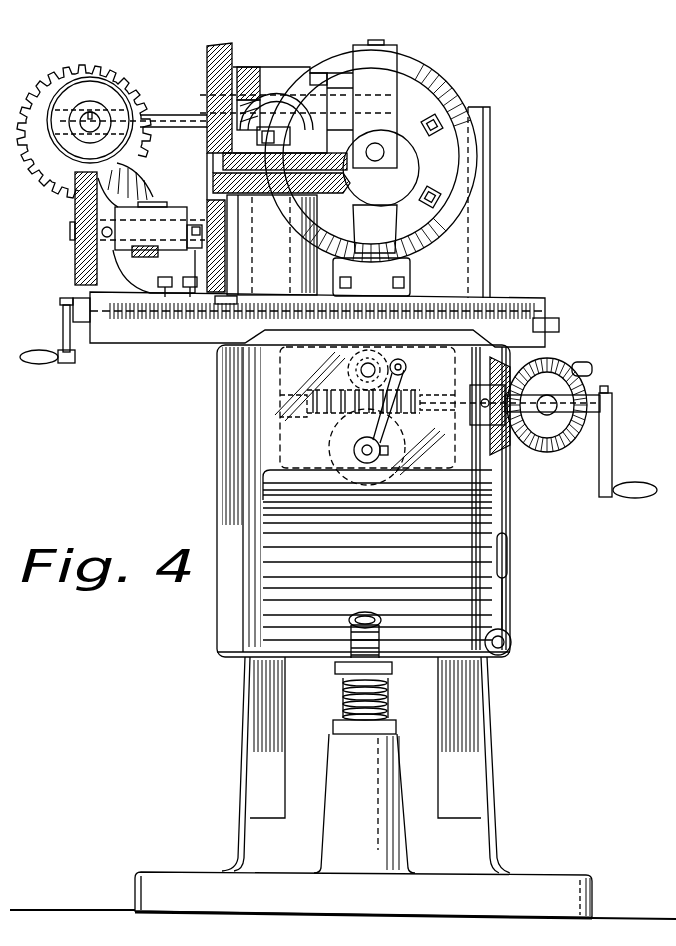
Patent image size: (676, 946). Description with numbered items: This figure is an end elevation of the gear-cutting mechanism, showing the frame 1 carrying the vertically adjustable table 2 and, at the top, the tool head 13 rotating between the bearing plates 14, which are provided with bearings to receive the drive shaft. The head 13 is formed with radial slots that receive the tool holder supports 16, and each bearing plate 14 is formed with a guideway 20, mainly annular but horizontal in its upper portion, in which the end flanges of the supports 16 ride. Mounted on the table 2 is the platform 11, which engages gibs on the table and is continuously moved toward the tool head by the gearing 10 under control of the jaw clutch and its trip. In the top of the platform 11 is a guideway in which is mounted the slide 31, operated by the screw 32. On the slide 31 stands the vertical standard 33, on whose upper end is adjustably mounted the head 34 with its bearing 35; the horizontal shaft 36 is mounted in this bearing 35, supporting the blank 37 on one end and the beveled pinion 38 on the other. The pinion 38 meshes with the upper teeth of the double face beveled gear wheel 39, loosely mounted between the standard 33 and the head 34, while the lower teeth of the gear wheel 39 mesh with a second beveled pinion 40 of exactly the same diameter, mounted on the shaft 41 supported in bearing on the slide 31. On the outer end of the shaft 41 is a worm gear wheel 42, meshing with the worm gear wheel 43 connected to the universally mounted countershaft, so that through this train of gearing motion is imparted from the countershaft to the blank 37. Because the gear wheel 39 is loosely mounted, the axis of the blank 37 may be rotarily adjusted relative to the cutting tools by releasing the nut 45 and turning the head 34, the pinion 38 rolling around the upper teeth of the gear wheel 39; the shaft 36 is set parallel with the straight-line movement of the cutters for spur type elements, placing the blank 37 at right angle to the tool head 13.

The frame 1 is at (245, 705).
The table 2 is at (217, 622).
The gearing 10 is at (522, 446).
The platform 11 is at (510, 298).
The head 13 is at (447, 172).
The bearing plates 14 is at (437, 90).
The tool holder supports 16 is at (573, 370).
The guideway 20 is at (430, 233).
The slide 31 is at (217, 294).
The screw 32 is at (147, 300).
The vertical standard 33 is at (268, 173).
The head 34 is at (313, 70).
The bearing 35 is at (241, 67).
The horizontal shaft 36 is at (243, 67).
The blank 37 is at (398, 50).
The beveled pinion 38 is at (207, 57).
The double face beveled gear wheel 39 is at (238, 207).
The beveled pinion 40 is at (209, 193).
The shaft 41 is at (75, 230).
The worm gear wheel 42 is at (77, 273).
The worm gear wheel 43 is at (108, 80).
The nut 45 is at (272, 127).